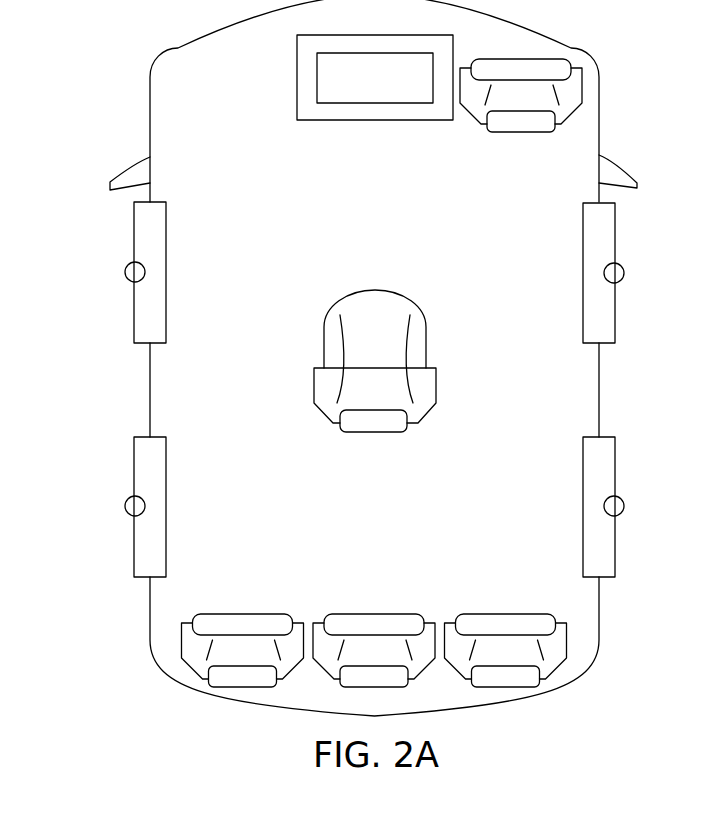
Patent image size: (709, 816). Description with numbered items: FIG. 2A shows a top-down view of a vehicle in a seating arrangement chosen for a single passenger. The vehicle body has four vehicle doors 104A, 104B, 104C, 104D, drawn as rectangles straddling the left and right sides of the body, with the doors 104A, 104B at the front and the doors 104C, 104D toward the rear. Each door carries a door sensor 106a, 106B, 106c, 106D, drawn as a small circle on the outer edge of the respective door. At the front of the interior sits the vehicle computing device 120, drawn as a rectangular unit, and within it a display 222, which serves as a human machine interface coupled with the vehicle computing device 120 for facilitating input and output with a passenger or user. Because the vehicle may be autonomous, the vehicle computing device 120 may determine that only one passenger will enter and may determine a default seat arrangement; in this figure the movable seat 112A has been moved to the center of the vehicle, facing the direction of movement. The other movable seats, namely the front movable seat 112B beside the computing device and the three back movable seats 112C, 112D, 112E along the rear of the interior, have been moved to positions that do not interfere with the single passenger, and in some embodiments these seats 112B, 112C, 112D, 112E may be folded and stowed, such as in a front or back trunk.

The vehicle door 104A is at (186, 188).
The vehicle door 104B is at (583, 315).
The vehicle door 104C is at (162, 437).
The vehicle door 104D is at (587, 437).
The door sensor 106a is at (124, 273).
The door sensor 106B is at (643, 245).
The door sensor 106c is at (124, 506).
The door sensor 106D is at (640, 478).
The movable seat 112A is at (377, 290).
The movable seat 112B is at (515, 133).
The movable seat 112C is at (243, 615).
The movable seat 112D is at (375, 615).
The movable seat 112E is at (507, 615).
The vehicle computing device 120 is at (410, 120).
The display 222 is at (342, 104).